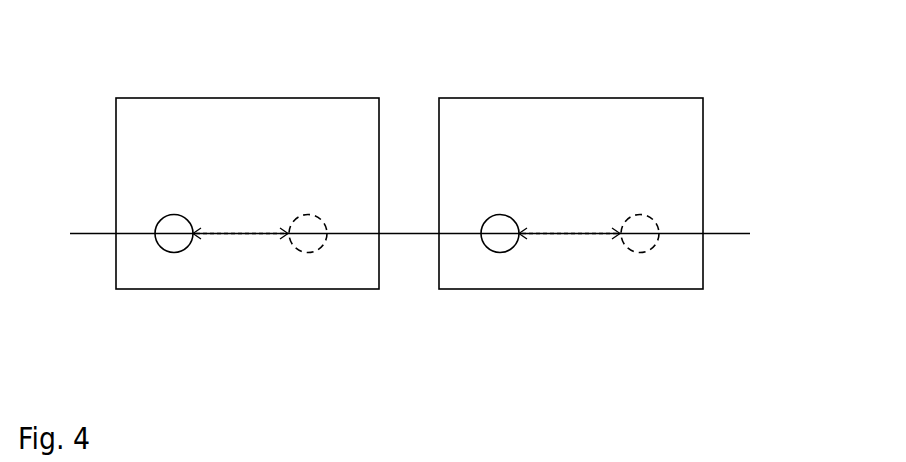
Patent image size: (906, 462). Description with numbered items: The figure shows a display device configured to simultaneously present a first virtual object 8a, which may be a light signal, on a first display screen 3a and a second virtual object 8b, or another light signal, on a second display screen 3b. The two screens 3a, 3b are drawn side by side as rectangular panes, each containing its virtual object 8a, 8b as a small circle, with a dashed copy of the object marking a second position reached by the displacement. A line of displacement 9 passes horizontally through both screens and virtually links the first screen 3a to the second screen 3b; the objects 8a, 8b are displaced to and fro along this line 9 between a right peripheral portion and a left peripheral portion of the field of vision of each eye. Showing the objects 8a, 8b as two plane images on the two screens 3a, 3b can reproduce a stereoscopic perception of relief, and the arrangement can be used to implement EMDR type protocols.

The first display screen 3a is at (355, 88).
The second display screen 3b is at (683, 86).
The first virtual object 8a is at (172, 253).
The second virtual object 8b is at (498, 253).
The line of displacement 9 is at (426, 235).